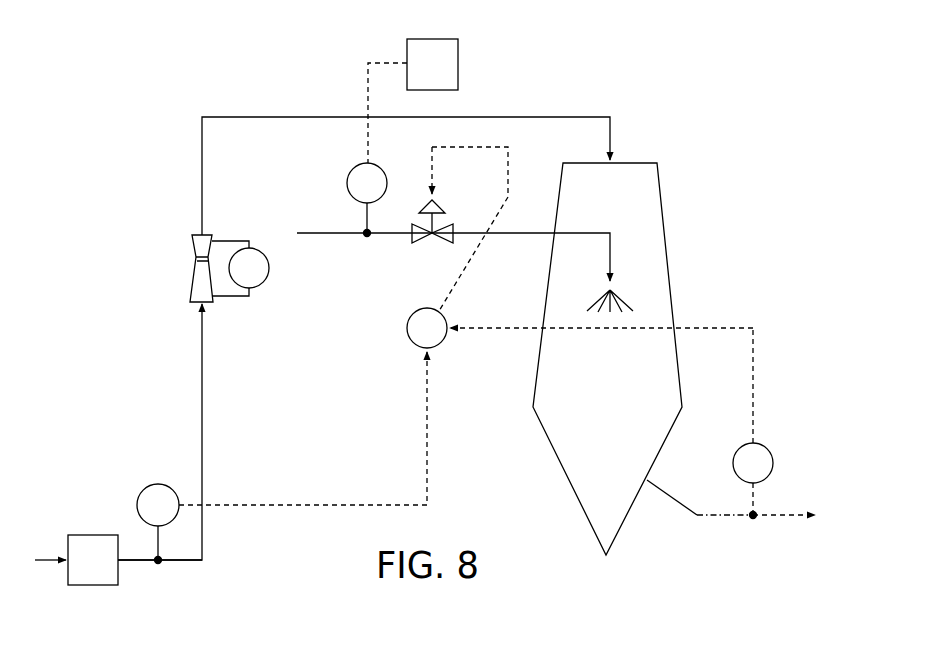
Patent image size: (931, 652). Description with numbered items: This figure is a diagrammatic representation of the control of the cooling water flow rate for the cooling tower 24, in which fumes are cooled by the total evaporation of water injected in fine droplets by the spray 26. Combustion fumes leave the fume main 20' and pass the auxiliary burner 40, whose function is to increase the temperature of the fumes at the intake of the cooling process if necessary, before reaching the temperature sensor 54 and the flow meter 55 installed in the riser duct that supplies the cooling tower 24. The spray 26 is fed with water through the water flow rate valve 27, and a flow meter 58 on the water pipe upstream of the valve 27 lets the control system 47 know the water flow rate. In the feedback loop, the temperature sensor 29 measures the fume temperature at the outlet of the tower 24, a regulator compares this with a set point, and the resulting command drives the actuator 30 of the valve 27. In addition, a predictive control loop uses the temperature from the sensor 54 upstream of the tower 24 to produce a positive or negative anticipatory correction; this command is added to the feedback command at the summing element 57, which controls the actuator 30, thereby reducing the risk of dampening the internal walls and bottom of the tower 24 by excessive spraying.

The fume main 20' is at (160, 582).
The cooling tower 24 is at (596, 443).
The spray 26 is at (622, 302).
The water flow rate valve 27 is at (447, 244).
The temperature sensor 29 is at (765, 444).
The actuator 30 is at (443, 208).
The auxiliary burner 40 is at (87, 535).
The control system 47 is at (459, 53).
The temperature sensor 54 is at (143, 490).
The flow meter 55 is at (267, 288).
The summing element 57 is at (412, 311).
The flow meter 58 is at (352, 167).